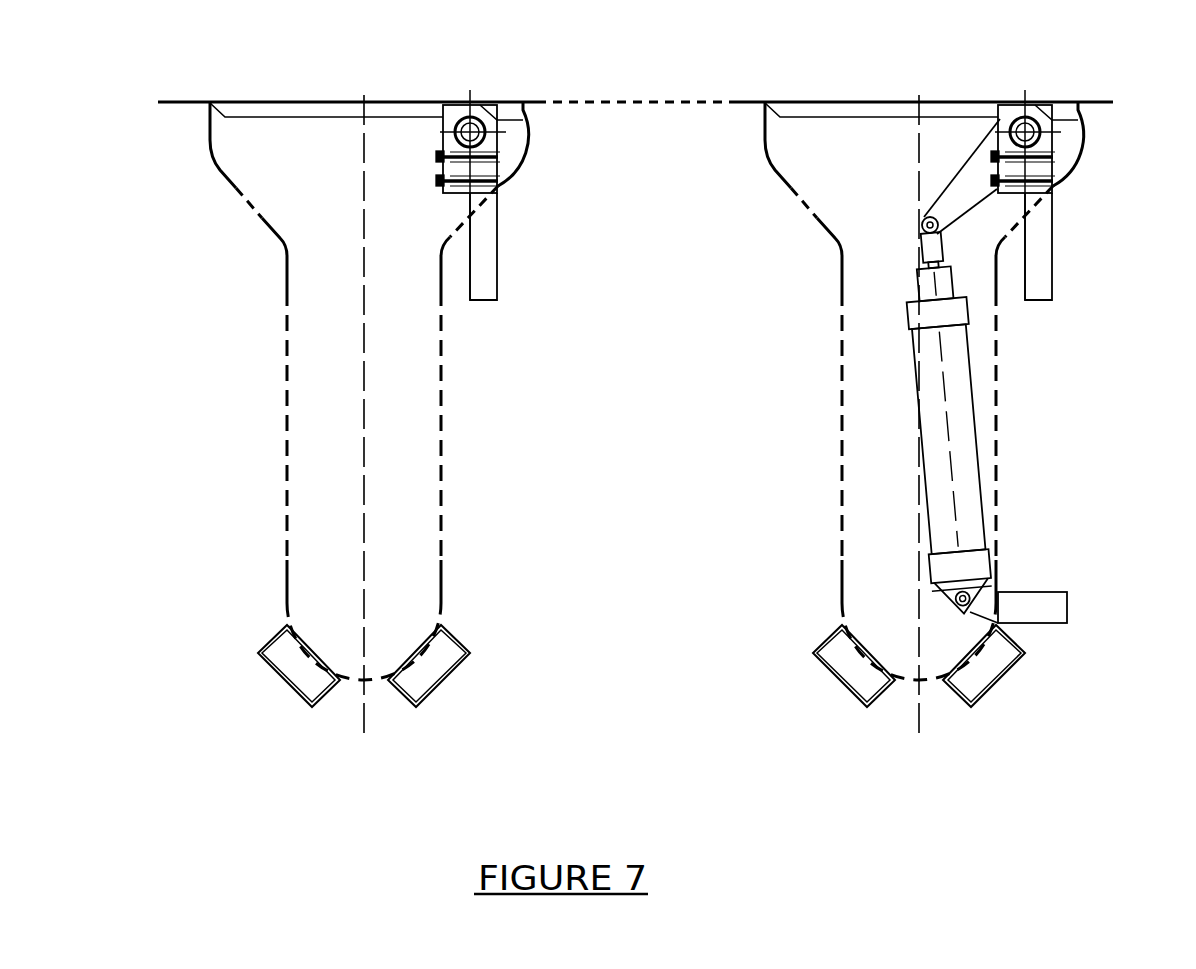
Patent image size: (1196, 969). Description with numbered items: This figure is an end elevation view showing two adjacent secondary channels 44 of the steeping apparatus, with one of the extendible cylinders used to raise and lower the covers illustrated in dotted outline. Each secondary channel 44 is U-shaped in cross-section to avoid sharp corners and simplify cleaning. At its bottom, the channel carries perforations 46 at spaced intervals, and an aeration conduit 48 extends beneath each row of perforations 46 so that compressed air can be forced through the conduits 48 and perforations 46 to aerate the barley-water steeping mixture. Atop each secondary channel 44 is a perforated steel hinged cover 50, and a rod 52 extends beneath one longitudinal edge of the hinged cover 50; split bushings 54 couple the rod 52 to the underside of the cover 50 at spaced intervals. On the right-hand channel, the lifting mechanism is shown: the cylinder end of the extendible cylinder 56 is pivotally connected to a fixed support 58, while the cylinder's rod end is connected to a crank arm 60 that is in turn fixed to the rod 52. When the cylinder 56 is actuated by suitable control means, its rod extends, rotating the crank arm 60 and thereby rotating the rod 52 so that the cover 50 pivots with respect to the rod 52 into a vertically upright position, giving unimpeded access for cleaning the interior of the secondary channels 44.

The secondary channel 44 is at (446, 438).
The perforations 46 is at (417, 660).
The aeration conduit 48 is at (292, 688).
The hinged cover 50 is at (303, 100).
The rod 52 is at (500, 172).
The split bushings 54 is at (500, 122).
The extendible cylinder 56 is at (982, 500).
The fixed support 58 is at (1047, 590).
The crank arm 60 is at (963, 167).